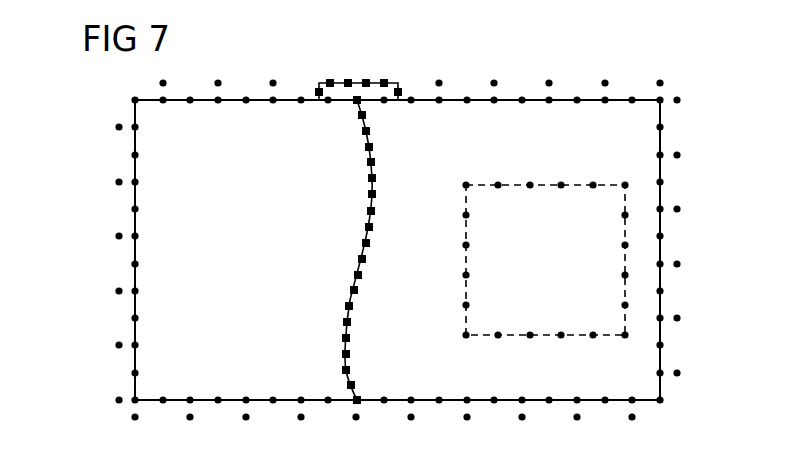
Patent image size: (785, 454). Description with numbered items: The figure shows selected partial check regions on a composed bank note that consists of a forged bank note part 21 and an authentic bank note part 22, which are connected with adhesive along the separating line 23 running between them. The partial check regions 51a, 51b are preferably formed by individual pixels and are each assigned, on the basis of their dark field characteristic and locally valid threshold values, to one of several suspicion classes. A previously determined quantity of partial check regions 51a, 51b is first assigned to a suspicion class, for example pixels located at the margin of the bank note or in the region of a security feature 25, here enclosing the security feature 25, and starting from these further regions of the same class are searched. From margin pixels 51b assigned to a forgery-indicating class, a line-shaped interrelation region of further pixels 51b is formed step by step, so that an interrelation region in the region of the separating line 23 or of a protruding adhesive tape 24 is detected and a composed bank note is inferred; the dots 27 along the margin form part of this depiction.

The forged bank note part 21 is at (150, 362).
The authentic bank note part 22 is at (645, 356).
The separating line 23 is at (370, 185).
The protruding adhesive tape 24 is at (323, 91).
The security feature 25 is at (575, 200).
The through holes 27 is at (587, 100).
The partial check region 51a is at (119, 182).
The partial check region 51b is at (385, 84).